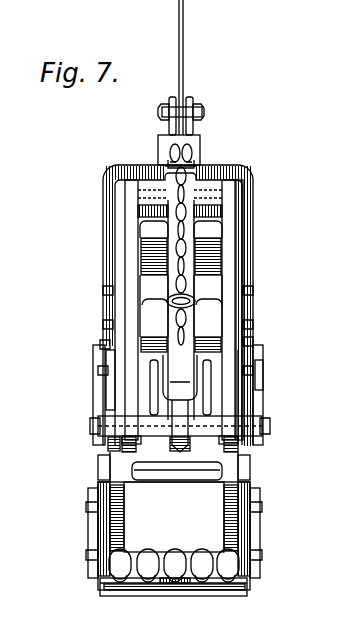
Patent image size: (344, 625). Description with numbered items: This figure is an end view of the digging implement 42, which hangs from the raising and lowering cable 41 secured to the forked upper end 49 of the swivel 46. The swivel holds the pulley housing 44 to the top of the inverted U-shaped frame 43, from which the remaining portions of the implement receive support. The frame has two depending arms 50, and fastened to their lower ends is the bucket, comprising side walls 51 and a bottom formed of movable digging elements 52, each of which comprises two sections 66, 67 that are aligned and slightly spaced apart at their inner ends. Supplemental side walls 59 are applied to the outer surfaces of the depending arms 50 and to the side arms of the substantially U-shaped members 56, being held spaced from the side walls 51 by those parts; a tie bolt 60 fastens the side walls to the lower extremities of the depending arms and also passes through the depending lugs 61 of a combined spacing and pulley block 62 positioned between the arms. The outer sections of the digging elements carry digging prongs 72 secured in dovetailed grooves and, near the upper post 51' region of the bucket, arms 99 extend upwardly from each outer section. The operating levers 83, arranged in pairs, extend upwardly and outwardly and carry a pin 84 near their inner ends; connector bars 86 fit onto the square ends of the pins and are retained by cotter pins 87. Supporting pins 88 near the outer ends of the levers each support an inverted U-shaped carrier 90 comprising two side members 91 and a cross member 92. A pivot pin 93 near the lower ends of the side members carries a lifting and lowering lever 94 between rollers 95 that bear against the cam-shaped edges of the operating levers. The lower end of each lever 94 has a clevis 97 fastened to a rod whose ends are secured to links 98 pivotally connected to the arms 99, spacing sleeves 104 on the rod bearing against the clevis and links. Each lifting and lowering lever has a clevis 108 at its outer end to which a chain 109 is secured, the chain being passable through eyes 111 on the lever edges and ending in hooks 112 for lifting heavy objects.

The suspension rod 41 is at (184, 80).
The forked upper end 49 is at (168, 122).
The swivel 46 is at (193, 125).
The pulley housing 44 is at (200, 142).
The clevis 108 is at (172, 156).
The hooks 112 is at (168, 165).
The inverted U-shaped frame 43 is at (250, 180).
The chain 109 is at (170, 190).
The cross member 92 is at (205, 206).
The lifting and lowering lever 94 is at (170, 232).
The side members 91 is at (234, 226).
The inverted U-shaped carrier 90 is at (228, 252).
The supporting pins 88 is at (240, 282).
The operating levers 83 is at (150, 297).
The eyes 111 is at (196, 299).
The depending arms 50 is at (226, 313).
The pivot pin 93 is at (145, 330).
The rollers 95 is at (100, 345).
The pin 84 is at (255, 378).
The cotter pins 87 is at (106, 374).
The digging implement 42 is at (246, 398).
The connector bars 86 is at (115, 400).
The spacing sleeves 104 is at (90, 420).
The clevis 97 is at (110, 433).
The links 98 is at (246, 440).
The combined spacing and pulley block 62 is at (215, 462).
The tie bolt 60 is at (180, 481).
The depending lugs 61 is at (120, 476).
The substantially U-shaped members 56 is at (235, 592).
The post 51' is at (134, 518).
The side walls 51 is at (181, 517).
The digging prongs 72 is at (133, 560).
The digging elements 52 is at (175, 560).
The arms 99 is at (110, 520).
The supplemental side walls 59 is at (98, 530).
The section 66 is at (182, 585).
The section 67 is at (210, 588).